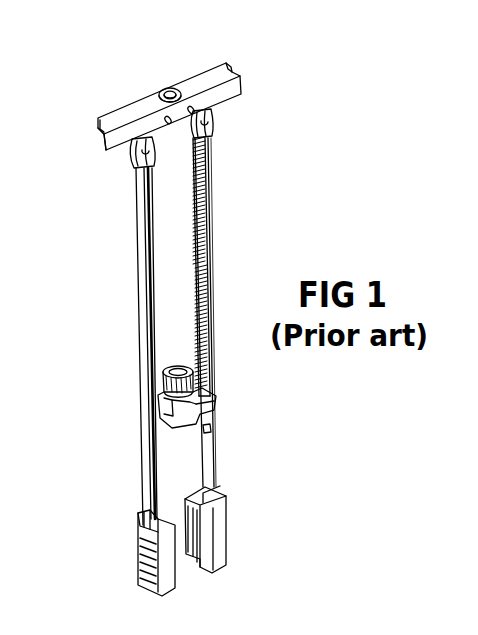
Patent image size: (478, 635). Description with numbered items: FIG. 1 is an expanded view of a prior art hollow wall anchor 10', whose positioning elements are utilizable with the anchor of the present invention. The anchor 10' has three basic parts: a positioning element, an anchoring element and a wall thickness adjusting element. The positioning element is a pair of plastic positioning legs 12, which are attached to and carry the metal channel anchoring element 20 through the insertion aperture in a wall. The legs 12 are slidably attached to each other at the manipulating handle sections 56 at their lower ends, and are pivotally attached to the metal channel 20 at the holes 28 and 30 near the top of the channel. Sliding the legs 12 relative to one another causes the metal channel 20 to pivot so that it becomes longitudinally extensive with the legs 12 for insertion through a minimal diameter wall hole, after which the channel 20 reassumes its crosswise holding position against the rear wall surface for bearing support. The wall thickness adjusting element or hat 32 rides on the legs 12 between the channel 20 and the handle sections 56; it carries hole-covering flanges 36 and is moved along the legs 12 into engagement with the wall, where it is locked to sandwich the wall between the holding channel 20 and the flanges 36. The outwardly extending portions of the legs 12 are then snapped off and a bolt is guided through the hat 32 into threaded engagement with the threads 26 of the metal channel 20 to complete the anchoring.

The hollow wall anchor 10' is at (156, 306).
The metal channel anchoring element 20 is at (111, 106).
The threads 26 is at (178, 90).
The hole 28 is at (167, 124).
The hole 30 is at (203, 103).
The positioning legs 12 is at (137, 281).
The adjusting element or hat 32 is at (184, 364).
The hole-covering flanges 36 is at (192, 413).
The manipulating handle sections 56 is at (149, 549).